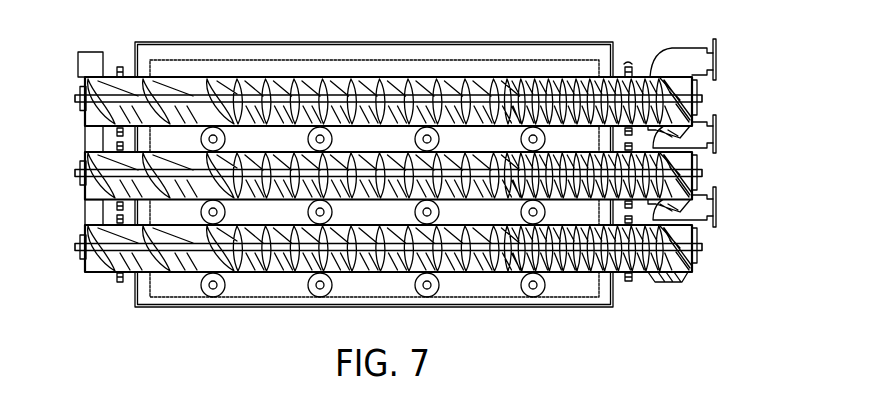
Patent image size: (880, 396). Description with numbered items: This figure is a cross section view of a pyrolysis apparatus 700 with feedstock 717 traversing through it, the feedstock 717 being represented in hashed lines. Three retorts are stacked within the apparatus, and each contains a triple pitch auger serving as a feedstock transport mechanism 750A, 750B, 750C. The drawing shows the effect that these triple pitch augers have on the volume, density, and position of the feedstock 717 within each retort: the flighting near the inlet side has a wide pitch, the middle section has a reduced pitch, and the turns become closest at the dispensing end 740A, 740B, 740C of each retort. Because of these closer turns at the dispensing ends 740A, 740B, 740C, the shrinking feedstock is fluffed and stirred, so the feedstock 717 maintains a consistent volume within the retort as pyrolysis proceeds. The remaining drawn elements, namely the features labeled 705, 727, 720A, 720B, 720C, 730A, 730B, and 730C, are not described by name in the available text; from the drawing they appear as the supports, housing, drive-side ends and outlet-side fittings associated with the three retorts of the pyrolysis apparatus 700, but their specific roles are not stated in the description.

The pyrolysis apparatus 700 is at (571, 309).
The bearings 705 is at (533, 298).
The feedstock 717 is at (228, 80).
The inner frame 727 is at (498, 60).
The drive unit 720A is at (93, 217).
The drive unit 720B is at (93, 141).
The drive unit 720C is at (93, 66).
The outlet port 730A is at (717, 216).
The outlet port 730B is at (717, 140).
The outlet port 730C is at (717, 62).
The dispensing end 740A is at (665, 285).
The dispensing end 740B is at (690, 205).
The dispensing end 740C is at (692, 128).
The feedstock transport mechanism 750A is at (116, 260).
The feedstock transport mechanism 750B is at (110, 187).
The feedstock transport mechanism 750C is at (110, 113).